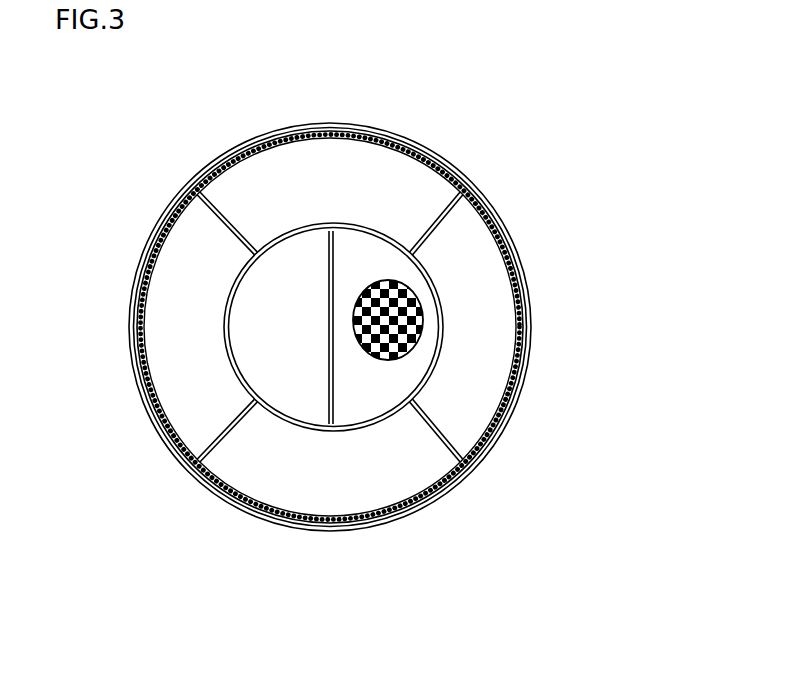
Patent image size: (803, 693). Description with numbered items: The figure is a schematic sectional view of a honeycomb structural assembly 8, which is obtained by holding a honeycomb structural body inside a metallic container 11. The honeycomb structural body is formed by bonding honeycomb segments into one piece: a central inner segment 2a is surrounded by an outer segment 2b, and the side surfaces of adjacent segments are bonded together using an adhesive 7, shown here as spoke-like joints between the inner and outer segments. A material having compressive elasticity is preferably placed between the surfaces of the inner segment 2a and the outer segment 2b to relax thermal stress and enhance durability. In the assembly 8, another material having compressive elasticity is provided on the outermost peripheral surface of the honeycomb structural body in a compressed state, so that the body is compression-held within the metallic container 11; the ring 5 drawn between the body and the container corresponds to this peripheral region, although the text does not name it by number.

The honeycomb structural assembly 8 is at (443, 122).
The metallic container 11 is at (487, 197).
The adhesive 7 is at (433, 220).
The tread ring 5 is at (523, 332).
The outer segment 2b is at (462, 398).
The inner segment 2a is at (375, 393).